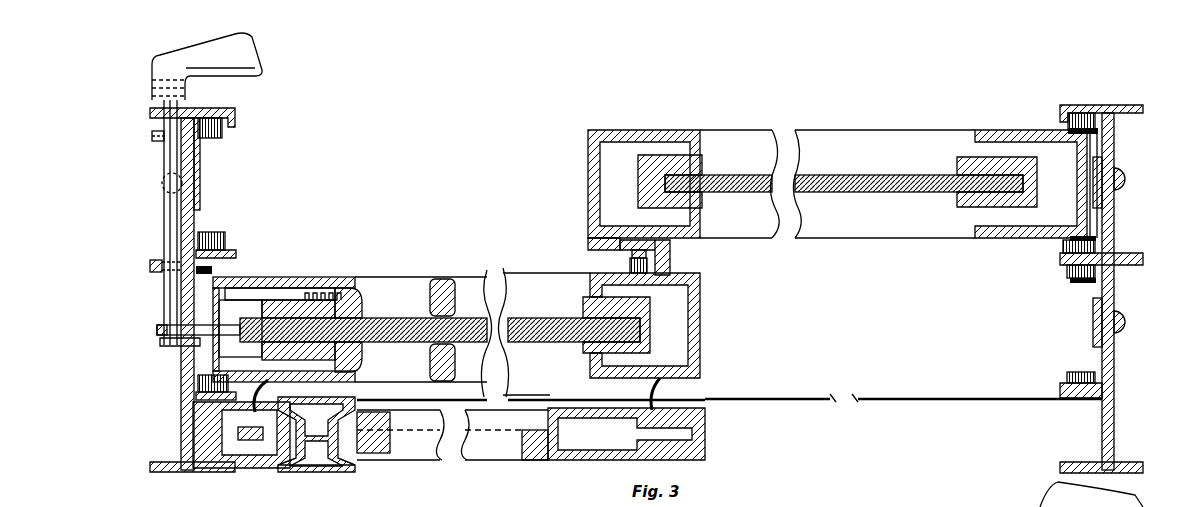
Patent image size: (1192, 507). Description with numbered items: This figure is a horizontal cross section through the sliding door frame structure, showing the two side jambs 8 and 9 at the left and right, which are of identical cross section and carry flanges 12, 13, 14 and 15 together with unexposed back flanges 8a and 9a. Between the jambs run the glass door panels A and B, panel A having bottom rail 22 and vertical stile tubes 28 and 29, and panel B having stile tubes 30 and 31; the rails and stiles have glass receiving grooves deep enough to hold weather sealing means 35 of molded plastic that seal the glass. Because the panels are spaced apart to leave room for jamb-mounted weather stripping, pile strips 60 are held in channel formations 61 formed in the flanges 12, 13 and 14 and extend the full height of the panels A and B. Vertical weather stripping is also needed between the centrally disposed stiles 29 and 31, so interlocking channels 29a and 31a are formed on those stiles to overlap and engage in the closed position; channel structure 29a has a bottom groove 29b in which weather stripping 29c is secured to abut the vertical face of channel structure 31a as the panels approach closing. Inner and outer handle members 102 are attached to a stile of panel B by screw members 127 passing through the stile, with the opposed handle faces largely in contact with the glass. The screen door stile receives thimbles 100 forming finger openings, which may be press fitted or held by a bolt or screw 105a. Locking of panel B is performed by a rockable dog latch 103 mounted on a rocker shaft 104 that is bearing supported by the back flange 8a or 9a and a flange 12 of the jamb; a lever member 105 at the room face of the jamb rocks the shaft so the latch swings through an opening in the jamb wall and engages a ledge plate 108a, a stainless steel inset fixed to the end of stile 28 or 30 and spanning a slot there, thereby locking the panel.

The side jamb 8 is at (179, 422).
The unexposed back flange 8a is at (150, 265).
The side jamb 9 is at (1112, 389).
The unexposed back flange 9a is at (1142, 258).
The flange 12 is at (233, 108).
The flange 13 is at (234, 251).
The flange 14 is at (1062, 385).
The flange 15 is at (230, 474).
The bottom rail 22 is at (872, 128).
The stile tube 28 is at (1003, 130).
The stile tube 29 is at (638, 130).
The interlocking channel 29a is at (590, 240).
The bottom groove 29b is at (630, 252).
The weather stripping 29c is at (628, 266).
The stile tube 30 is at (320, 278).
The stile tube 31 is at (598, 283).
The interlocking channel 31a is at (672, 250).
The weather sealing means 35 is at (586, 340).
The pile strips 60 is at (222, 136).
The channel formation 61 is at (200, 270).
The thimble 100 is at (341, 472).
The handle member 102 is at (446, 278).
The dog latch 103 is at (165, 325).
The rocker shaft 104 is at (162, 186).
The lever member 105 is at (248, 45).
The bolt or screw 105a is at (334, 495).
The ledge plate 108a is at (182, 344).
The screw member 127 is at (283, 290).
The glass door panel A is at (838, 172).
The glass door panel B is at (511, 252).